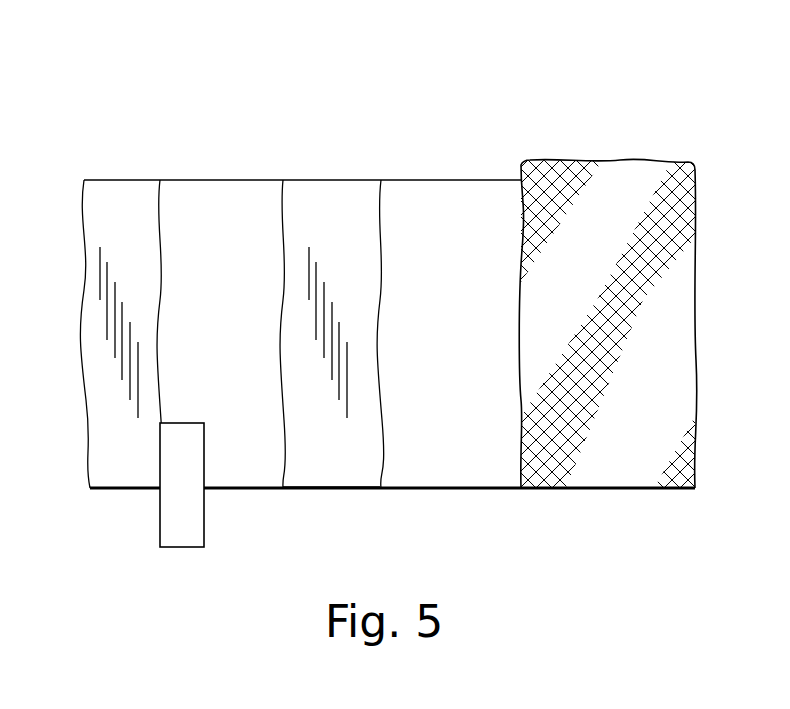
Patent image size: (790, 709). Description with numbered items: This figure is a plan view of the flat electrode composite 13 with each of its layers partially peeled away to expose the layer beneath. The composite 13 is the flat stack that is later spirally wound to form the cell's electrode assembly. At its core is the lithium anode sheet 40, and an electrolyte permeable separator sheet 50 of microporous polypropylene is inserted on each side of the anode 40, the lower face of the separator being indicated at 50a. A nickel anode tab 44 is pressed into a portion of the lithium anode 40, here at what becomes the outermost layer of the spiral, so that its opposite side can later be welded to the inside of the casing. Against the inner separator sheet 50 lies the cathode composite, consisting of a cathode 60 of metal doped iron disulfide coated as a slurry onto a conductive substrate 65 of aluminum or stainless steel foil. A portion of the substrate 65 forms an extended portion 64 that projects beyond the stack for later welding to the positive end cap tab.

The flat electrode composite 13 is at (270, 76).
The lithium anode sheet 40 is at (222, 187).
The anode tab 44 is at (162, 515).
The separator sheet 50 is at (121, 187).
The bottom surface of electrode layer 50a is at (327, 478).
The cathode 60 is at (453, 187).
The extended portion 64 is at (628, 160).
The conductive substrate 65 is at (607, 480).